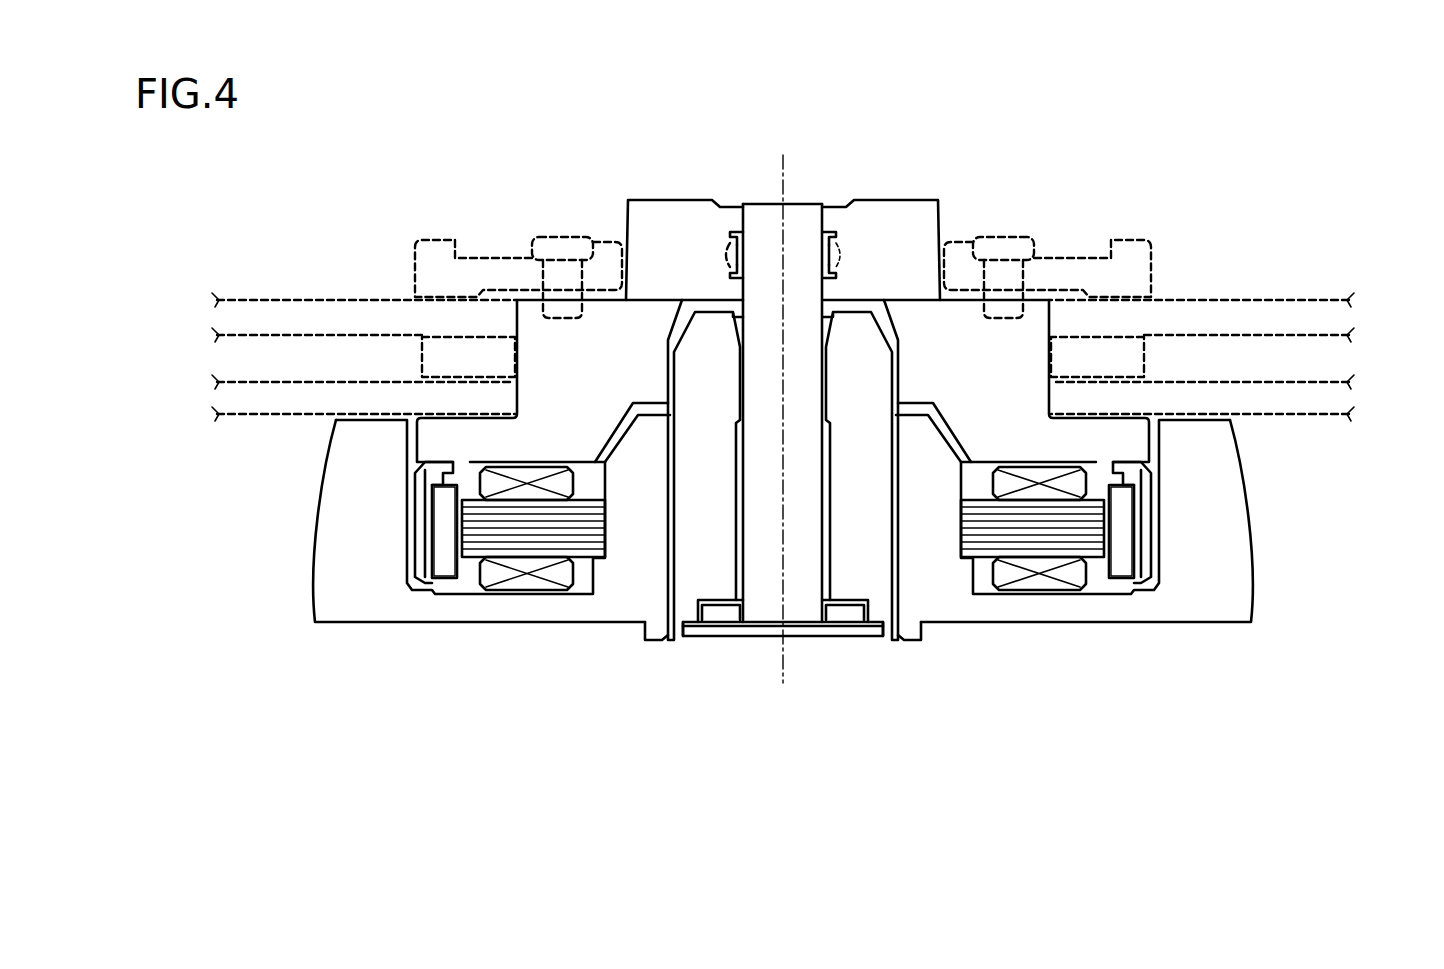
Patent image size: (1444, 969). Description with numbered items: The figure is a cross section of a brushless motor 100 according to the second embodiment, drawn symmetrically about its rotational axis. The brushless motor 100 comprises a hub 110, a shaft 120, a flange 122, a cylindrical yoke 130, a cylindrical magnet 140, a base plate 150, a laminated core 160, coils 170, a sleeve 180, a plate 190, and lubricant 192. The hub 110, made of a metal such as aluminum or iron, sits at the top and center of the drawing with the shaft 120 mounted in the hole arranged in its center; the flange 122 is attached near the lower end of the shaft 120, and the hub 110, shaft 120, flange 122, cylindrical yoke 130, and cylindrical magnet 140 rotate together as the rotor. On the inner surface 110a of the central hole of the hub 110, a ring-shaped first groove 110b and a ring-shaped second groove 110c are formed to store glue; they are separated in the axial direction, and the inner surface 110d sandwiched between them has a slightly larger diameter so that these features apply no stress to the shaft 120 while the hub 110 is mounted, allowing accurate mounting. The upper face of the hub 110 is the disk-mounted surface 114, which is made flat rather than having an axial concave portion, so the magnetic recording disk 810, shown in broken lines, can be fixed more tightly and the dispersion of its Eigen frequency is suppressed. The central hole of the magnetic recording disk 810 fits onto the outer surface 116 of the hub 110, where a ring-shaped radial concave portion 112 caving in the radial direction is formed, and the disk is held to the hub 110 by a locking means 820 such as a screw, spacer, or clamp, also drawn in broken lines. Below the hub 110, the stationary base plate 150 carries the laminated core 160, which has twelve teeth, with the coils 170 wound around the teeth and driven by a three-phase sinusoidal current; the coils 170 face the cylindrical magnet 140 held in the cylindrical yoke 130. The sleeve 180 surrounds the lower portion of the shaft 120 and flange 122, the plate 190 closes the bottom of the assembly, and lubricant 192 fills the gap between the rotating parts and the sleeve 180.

The brushless motor 100 is at (766, 786).
The hub 110 is at (880, 210).
The inner surface 110a is at (762, 213).
The first groove 110b is at (732, 238).
The second groove 110c is at (730, 275).
The inner surface sandwiched between the grooves 110d is at (726, 256).
The radial concave portion 112 is at (530, 418).
The disk-mounted surface 114 is at (445, 417).
The outer surface 116 is at (508, 366).
The shaft 120 is at (800, 217).
The flange 122 is at (720, 638).
The cylindrical yoke 130 is at (427, 487).
The cylindrical magnet 140 is at (447, 535).
The base plate 150 is at (1222, 578).
The laminated core 160 is at (473, 542).
The coils 170 is at (525, 583).
The sleeve 180 is at (662, 643).
The plate 190 is at (792, 640).
The lubricant 192 is at (827, 327).
The magnetic recording disk 810 is at (230, 398).
The locking means 820 is at (455, 357).